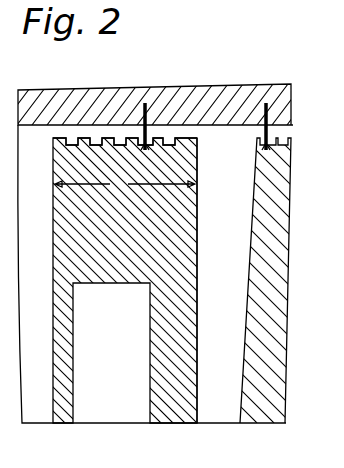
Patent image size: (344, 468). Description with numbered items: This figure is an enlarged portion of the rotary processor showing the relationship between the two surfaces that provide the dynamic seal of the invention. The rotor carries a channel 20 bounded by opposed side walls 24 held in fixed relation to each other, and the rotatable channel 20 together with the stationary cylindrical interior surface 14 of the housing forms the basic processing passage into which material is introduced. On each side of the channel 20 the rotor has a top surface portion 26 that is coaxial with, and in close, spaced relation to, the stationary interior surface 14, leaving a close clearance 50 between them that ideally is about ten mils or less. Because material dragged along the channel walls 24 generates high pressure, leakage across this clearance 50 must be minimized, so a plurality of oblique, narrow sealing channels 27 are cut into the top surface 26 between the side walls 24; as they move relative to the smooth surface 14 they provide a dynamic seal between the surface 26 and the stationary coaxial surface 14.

The cylindrical interior surface 14 is at (57, 113).
The clearance 50 is at (146, 128).
The sealing channels 27 is at (181, 137).
The top surface portion 26 is at (198, 140).
The side wall 24 is at (199, 246).
The channel 20 is at (172, 280).